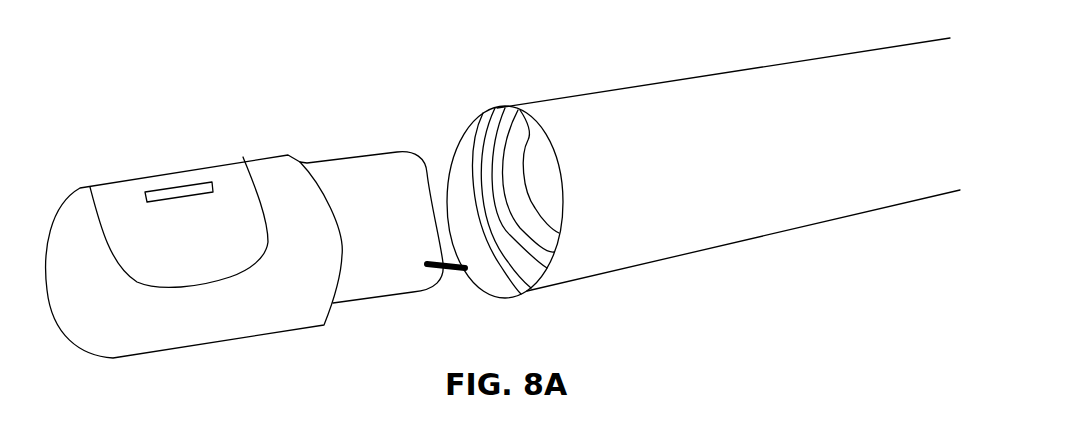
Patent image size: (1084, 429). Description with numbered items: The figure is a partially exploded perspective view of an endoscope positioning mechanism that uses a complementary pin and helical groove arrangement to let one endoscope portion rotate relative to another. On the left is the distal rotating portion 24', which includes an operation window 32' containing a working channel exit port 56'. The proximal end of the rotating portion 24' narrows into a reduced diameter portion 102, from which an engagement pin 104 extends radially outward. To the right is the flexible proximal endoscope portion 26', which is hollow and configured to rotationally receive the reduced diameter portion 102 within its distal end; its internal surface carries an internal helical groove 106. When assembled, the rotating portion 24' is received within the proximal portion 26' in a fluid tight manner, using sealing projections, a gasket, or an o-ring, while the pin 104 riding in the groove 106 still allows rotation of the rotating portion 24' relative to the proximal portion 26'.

The distal rotating portion 24' is at (195, 208).
The operation window 32' is at (157, 206).
The working channel exit port 56' is at (179, 159).
The reduced diameter portion 102 is at (360, 153).
The engagement pin 104 is at (457, 272).
The flexible proximal endoscope portion 26' is at (703, 161).
The internal helical groove 106 is at (524, 112).